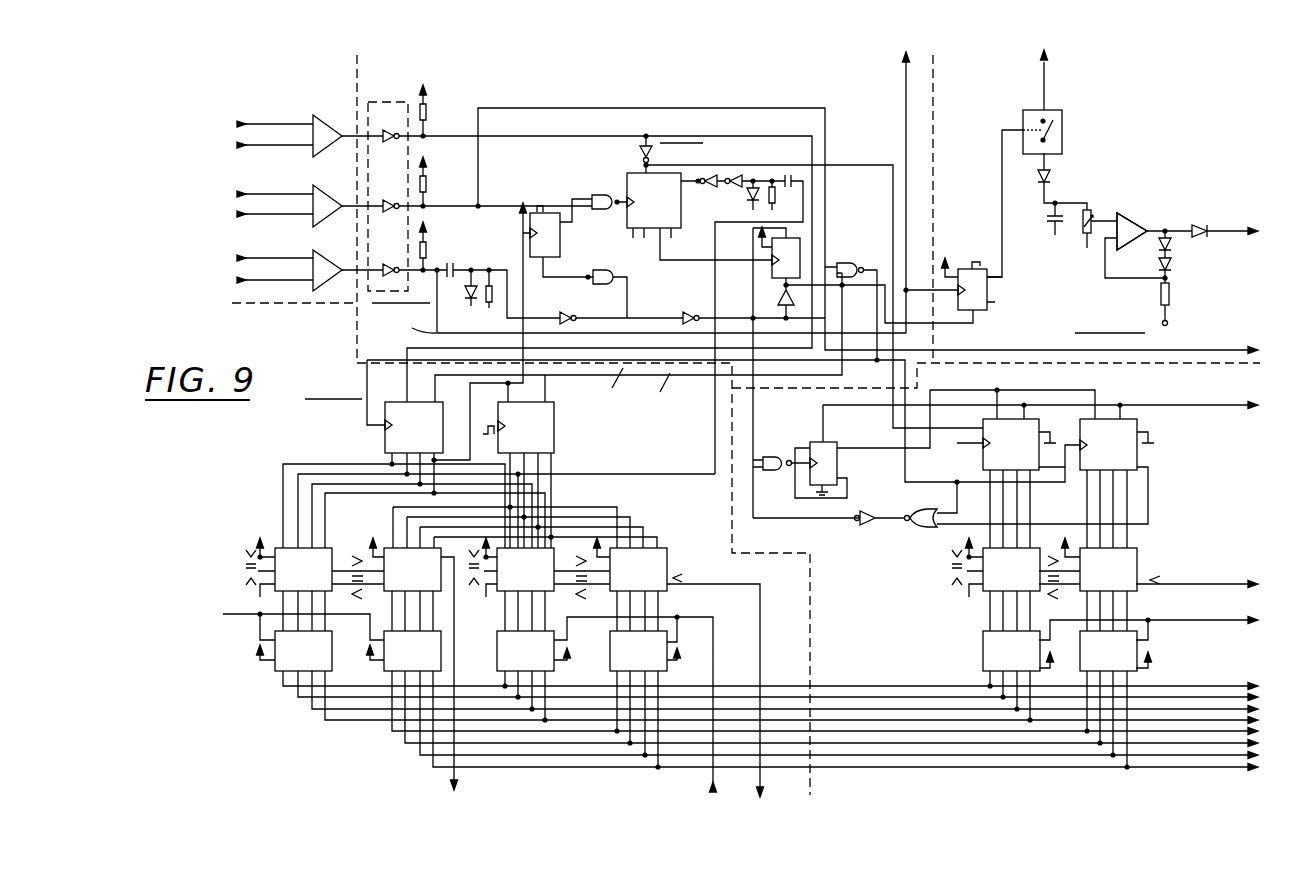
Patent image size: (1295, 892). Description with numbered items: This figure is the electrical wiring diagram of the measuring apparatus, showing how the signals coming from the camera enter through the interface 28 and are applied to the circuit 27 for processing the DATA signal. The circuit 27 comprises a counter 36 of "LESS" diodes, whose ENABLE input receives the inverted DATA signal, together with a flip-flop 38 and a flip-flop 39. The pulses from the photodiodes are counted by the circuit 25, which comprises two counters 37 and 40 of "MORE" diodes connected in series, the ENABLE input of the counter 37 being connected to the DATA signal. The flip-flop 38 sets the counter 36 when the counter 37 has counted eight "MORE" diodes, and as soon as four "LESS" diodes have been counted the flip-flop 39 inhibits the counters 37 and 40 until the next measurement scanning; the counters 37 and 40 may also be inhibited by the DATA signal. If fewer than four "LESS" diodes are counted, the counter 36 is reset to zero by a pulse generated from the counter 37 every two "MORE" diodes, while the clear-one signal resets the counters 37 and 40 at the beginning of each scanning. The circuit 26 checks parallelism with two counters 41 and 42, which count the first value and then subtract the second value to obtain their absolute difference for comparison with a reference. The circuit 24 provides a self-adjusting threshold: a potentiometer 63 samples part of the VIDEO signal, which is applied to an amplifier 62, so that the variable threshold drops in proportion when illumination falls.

The interface 28 is at (289, 209).
The circuit for processing the DATA signal 27 is at (771, 421).
The self-adjusting threshold circuit 24 is at (1100, 202).
The counting circuit 25 is at (716, 667).
The parallelism checking circuit 26 is at (1005, 578).
The counter of LESS diodes 36 is at (654, 205).
The counter of MORE diodes 37 is at (414, 419).
The flip-flop 38 is at (541, 247).
The flip-flop 39 is at (800, 251).
The counter of MORE diodes 40 is at (518, 419).
The counter 41 is at (1019, 444).
The counter 42 is at (1117, 444).
The amplifier 62 is at (1135, 226).
The potentiometer 63 is at (1092, 208).